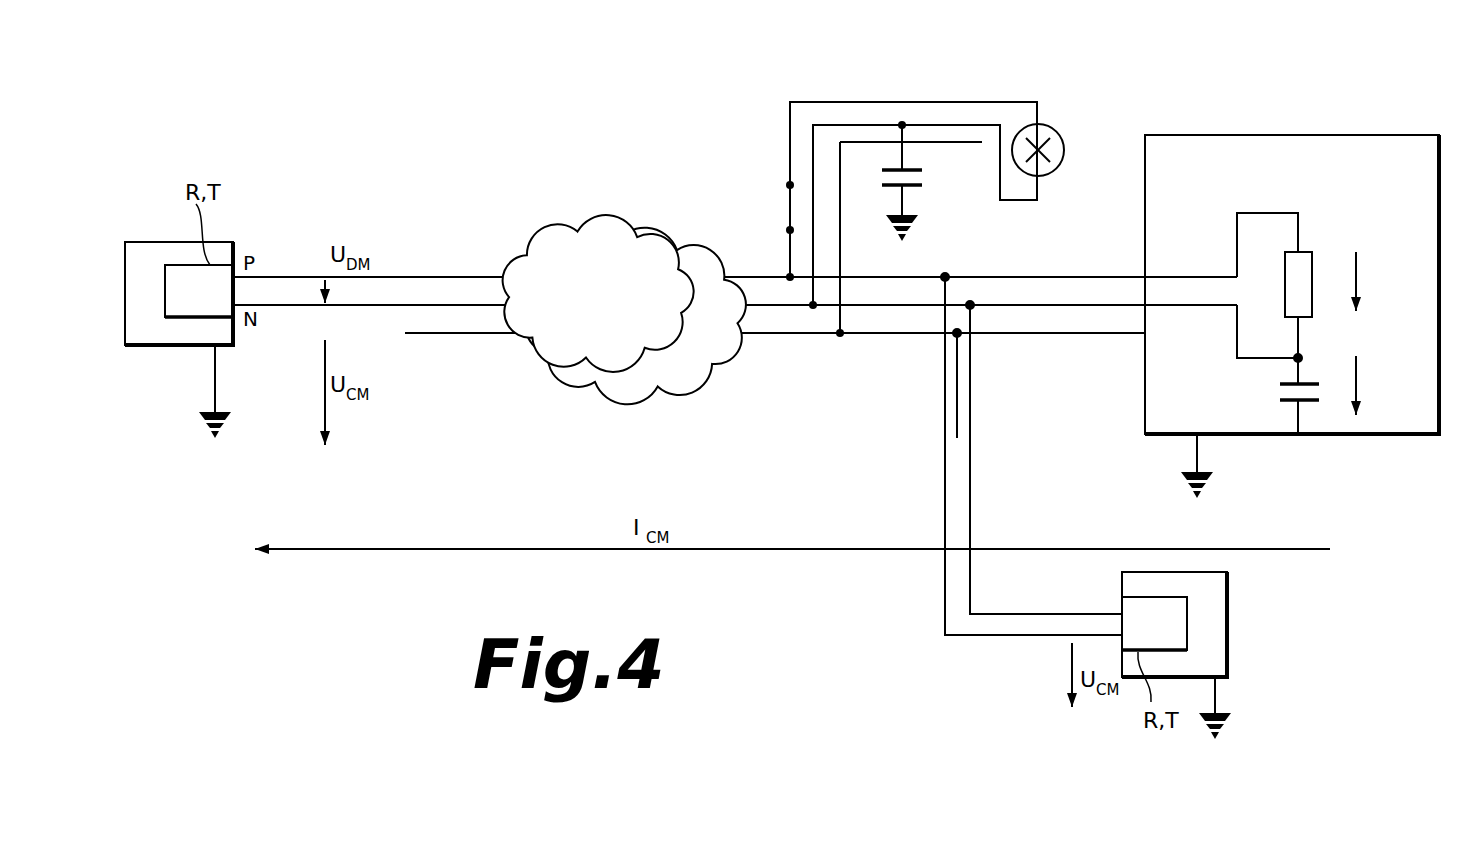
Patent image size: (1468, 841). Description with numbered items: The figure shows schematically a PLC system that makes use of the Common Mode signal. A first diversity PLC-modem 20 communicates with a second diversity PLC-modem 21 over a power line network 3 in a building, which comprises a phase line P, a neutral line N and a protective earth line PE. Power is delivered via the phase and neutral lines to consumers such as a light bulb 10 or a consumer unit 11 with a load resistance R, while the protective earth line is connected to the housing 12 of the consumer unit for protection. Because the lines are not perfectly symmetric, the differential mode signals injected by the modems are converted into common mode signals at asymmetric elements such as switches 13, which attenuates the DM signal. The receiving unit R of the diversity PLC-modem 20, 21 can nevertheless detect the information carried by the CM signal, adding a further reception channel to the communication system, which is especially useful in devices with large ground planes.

The power line network 3 is at (565, 235).
The light bulb 10 is at (1056, 130).
The consumer unit 11 is at (1398, 192).
The housing 12 is at (1293, 271).
The light switch 13 is at (790, 185).
The first diversity PLC-modem 20 is at (132, 242).
The second diversity PLC-modem 21 is at (1227, 625).